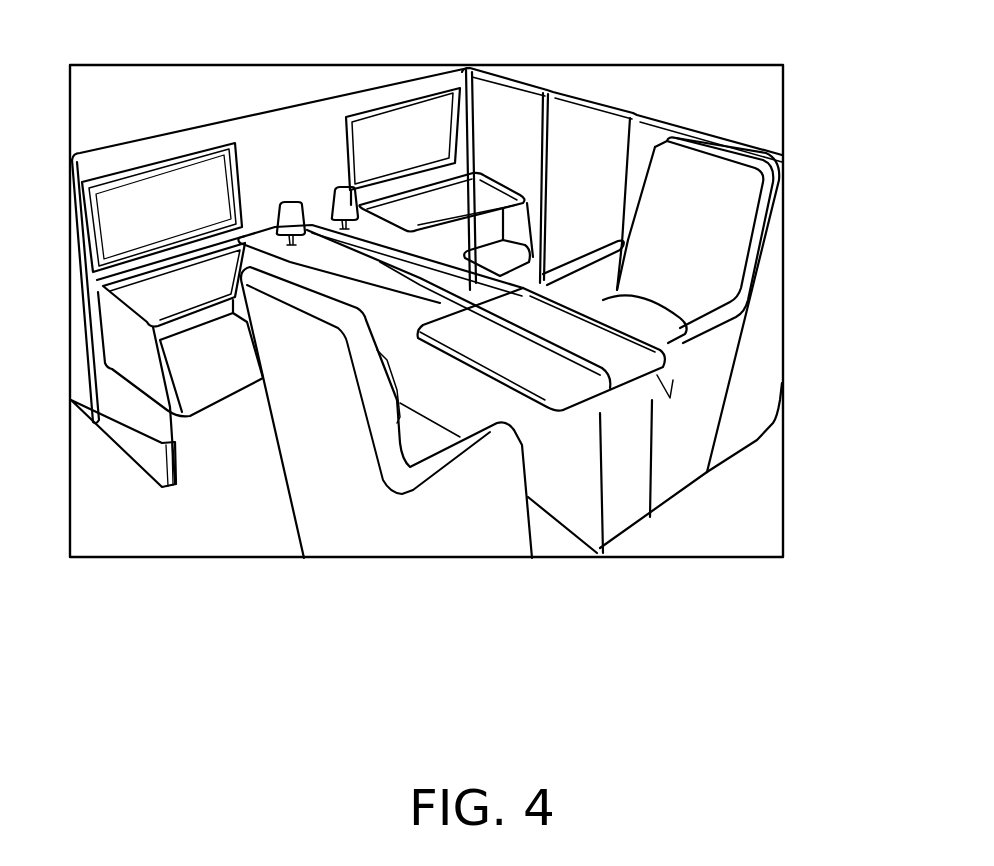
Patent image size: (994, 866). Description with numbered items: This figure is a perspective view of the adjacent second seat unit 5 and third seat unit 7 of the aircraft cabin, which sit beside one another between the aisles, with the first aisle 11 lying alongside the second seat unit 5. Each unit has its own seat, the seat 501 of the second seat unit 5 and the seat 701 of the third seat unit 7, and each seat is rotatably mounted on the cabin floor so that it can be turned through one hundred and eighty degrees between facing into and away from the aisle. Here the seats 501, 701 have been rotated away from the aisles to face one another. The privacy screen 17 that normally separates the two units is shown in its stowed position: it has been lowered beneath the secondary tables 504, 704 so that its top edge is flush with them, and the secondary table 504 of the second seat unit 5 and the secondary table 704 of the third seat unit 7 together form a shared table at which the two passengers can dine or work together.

The third seat unit 7 is at (690, 90).
The seat 701 is at (767, 230).
The secondary table 704 is at (623, 353).
The privacy screen 17 is at (613, 373).
The first aisle 11 is at (113, 507).
The second seat unit 5 is at (187, 527).
The seat 501 is at (355, 515).
The secondary table 504 is at (565, 395).